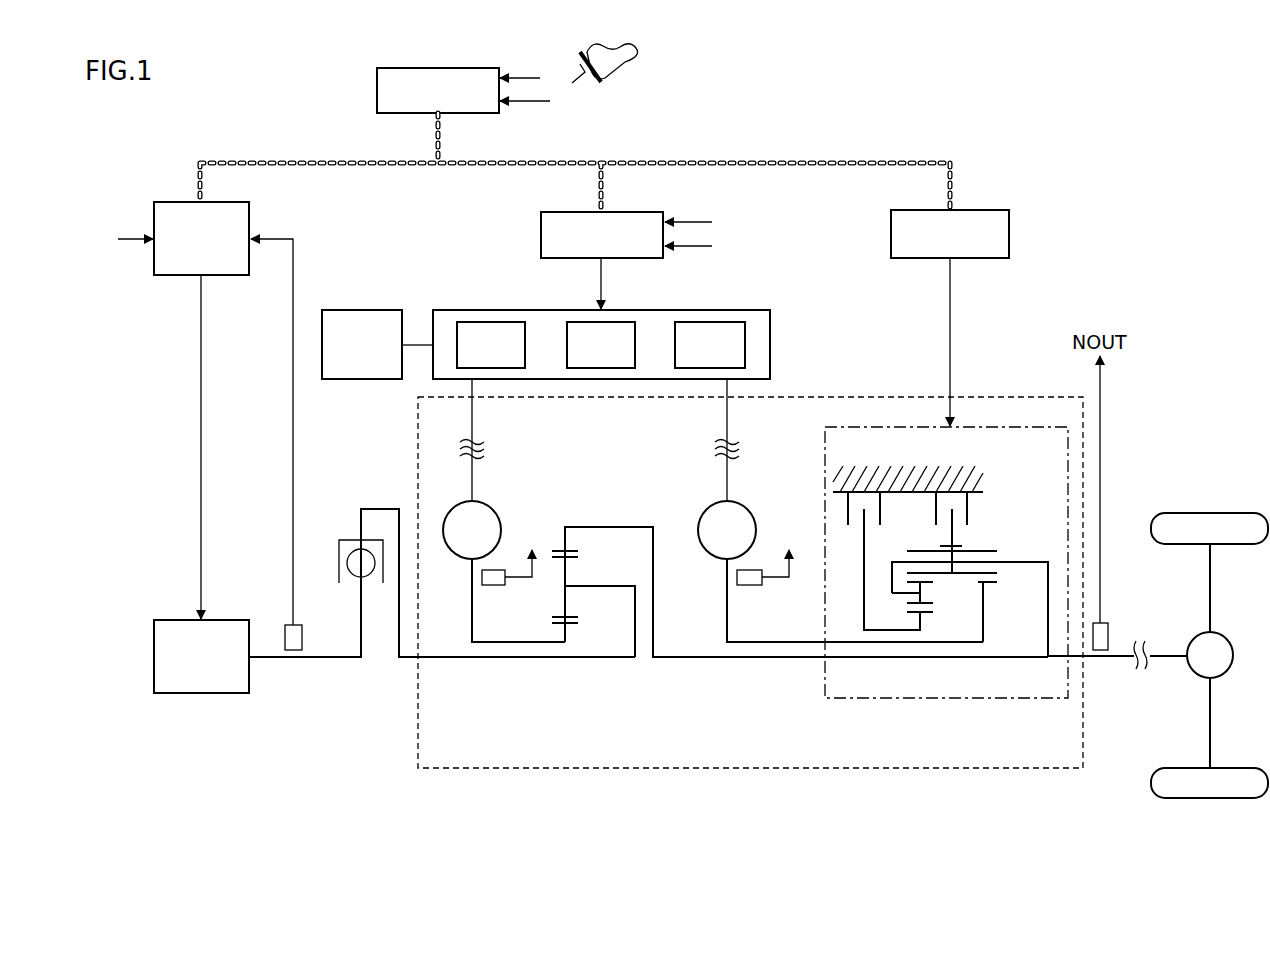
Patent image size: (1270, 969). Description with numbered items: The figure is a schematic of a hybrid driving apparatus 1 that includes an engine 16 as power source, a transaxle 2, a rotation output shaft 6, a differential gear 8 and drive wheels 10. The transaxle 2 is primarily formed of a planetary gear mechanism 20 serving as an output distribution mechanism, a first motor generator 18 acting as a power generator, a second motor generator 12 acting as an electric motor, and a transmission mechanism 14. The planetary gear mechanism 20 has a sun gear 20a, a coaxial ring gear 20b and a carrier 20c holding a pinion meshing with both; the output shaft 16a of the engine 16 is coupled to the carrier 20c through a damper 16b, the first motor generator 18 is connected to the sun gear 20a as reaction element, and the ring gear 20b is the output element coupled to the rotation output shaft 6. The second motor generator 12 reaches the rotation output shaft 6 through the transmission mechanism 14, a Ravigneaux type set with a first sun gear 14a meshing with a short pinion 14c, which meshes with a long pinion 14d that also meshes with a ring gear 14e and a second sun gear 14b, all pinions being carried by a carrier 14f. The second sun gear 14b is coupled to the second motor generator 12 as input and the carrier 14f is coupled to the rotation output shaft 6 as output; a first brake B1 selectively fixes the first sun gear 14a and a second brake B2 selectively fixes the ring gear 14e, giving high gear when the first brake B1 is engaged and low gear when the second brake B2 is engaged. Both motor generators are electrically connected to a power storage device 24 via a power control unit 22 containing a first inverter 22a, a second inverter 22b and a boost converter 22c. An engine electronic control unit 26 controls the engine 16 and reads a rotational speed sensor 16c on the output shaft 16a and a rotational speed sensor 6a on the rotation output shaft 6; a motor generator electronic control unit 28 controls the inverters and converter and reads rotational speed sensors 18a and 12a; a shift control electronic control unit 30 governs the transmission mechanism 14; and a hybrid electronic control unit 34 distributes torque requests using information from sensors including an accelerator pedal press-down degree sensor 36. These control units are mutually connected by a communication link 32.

The hybrid driving apparatus 1 is at (1208, 160).
The transaxle 2 is at (965, 768).
The rotation output shaft 6 is at (1115, 659).
The rotational speed sensor 6a is at (1108, 632).
The differential gear 8 is at (1228, 640).
The drive wheels 10 is at (1210, 513).
The second motor generator 12 is at (747, 508).
The rotational speed sensor 12a is at (749, 586).
The transmission mechanism 14 is at (946, 589).
The first sun gear 14a is at (926, 614).
The second sun gear 14b is at (990, 586).
The short pinion 14c is at (932, 604).
The long pinion 14d is at (918, 550).
The ring gear 14e is at (962, 542).
The carrier 14f is at (1016, 562).
The engine 16 is at (210, 693).
The output shaft 16a is at (332, 658).
The damper 16b is at (344, 540).
The rotational speed sensor 16c is at (302, 637).
The first motor generator 18 is at (492, 508).
The rotational speed sensor 18a is at (494, 586).
The planetary gear mechanism 20 is at (773, 624).
The sun gear 20a is at (578, 626).
The ring gear 20b is at (578, 551).
The carrier 20c is at (612, 586).
The power control unit 22 is at (627, 328).
The first inverter 22a is at (492, 322).
The second inverter 22b is at (622, 322).
The boost converter 22c is at (706, 322).
The power storage device 24 is at (364, 310).
The electronic control unit for engine 26 is at (224, 202).
The electronic control unit for motor generators 28 is at (634, 212).
The electronic control unit for shift control 30 is at (984, 210).
The communication link 32 is at (915, 160).
The hybrid electronic control unit 34 is at (470, 68).
The accelerator pedal press-down degree sensor 36 is at (578, 70).
The first brake B1 is at (850, 520).
The second brake B2 is at (970, 513).